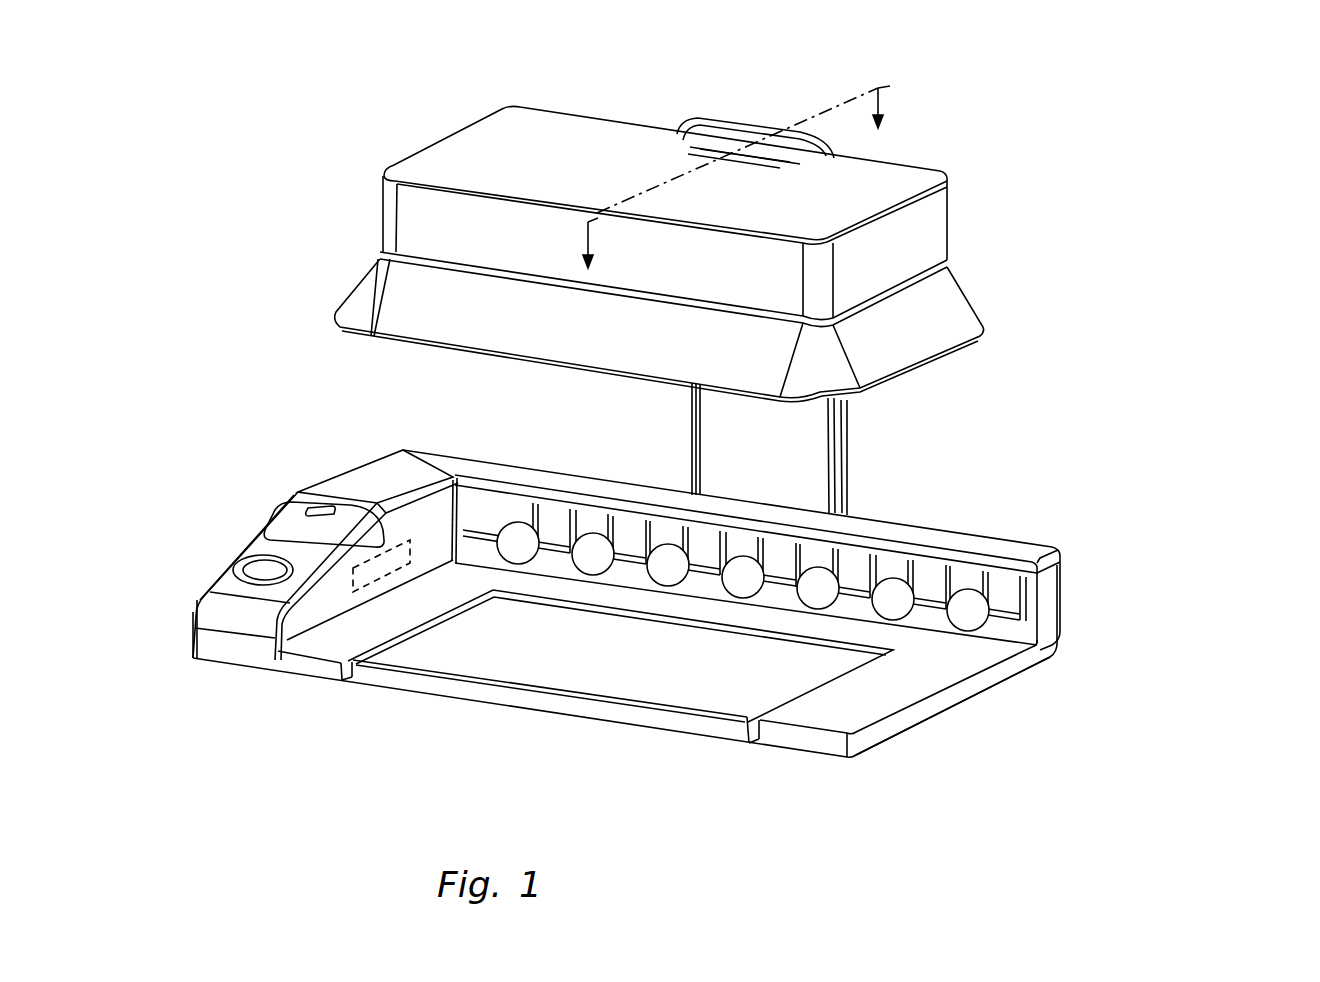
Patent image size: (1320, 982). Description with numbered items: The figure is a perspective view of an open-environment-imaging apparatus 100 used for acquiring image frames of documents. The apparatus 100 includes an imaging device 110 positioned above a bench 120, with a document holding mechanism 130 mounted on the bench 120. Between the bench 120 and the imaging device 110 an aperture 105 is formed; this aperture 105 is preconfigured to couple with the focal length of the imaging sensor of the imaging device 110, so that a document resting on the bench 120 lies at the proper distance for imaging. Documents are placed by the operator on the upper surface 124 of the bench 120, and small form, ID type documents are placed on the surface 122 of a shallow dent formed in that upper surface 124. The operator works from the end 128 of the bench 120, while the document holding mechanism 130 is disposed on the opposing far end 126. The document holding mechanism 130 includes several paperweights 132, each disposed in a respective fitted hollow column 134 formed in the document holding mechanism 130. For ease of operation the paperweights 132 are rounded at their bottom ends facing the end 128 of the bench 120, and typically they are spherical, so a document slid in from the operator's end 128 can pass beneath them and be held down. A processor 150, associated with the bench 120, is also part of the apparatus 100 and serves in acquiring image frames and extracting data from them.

The open-environment-imaging apparatus 100 is at (327, 147).
The aperture 105 is at (888, 285).
The imaging device 110 is at (947, 226).
The bench 120 is at (350, 474).
The surface 122 is at (470, 637).
The upper surface 124 is at (866, 687).
The far end 126 is at (1062, 638).
The end 128 is at (333, 665).
The document holding mechanism 130 is at (1083, 555).
The paperweights 132 is at (815, 596).
The fitted hollow columns 134 is at (597, 517).
The processor 150 is at (382, 552).